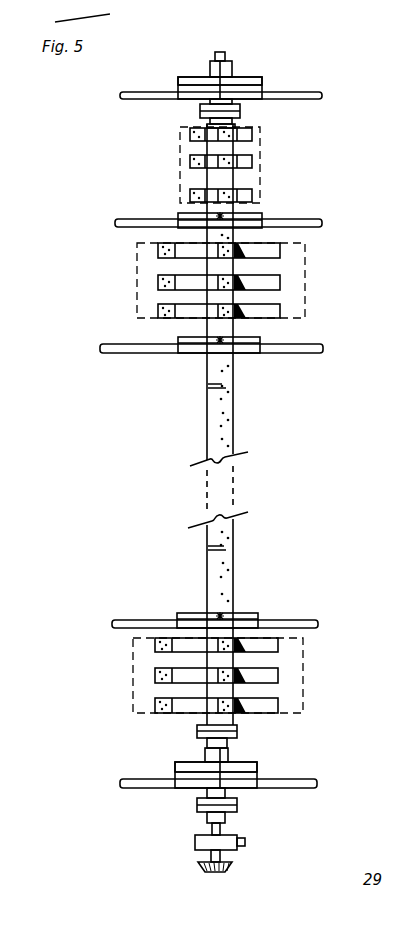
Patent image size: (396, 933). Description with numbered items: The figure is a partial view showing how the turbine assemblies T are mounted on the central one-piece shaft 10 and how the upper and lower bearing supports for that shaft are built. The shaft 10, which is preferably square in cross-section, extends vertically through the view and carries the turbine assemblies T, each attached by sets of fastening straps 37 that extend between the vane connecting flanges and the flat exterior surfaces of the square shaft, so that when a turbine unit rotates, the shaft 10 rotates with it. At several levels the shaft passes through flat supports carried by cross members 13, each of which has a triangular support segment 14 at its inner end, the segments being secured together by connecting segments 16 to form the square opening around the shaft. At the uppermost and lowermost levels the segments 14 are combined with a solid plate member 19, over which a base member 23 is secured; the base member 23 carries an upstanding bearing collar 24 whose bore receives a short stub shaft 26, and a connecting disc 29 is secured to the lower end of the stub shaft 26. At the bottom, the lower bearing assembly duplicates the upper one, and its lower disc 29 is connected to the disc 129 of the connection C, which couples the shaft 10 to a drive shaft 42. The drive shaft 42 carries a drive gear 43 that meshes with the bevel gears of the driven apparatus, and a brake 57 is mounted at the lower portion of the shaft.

The shaft 10 is at (222, 180).
The cross member 13 is at (120, 97).
The support segment 14 is at (185, 98).
The connecting segment 16 is at (178, 213).
The solid plate member 19 is at (262, 90).
The base member 23 is at (197, 77).
The bearing collar 24 is at (235, 67).
The stub shaft 26 is at (220, 52).
The connecting disc 29 is at (300, 121).
The fastening strap 37 is at (253, 162).
The turbine assembly T is at (262, 143).
The connection C is at (237, 800).
The disc 129 is at (200, 805).
The drive shaft 42 is at (223, 828).
The brake 57 is at (195, 843).
The drive gear 43 is at (200, 866).